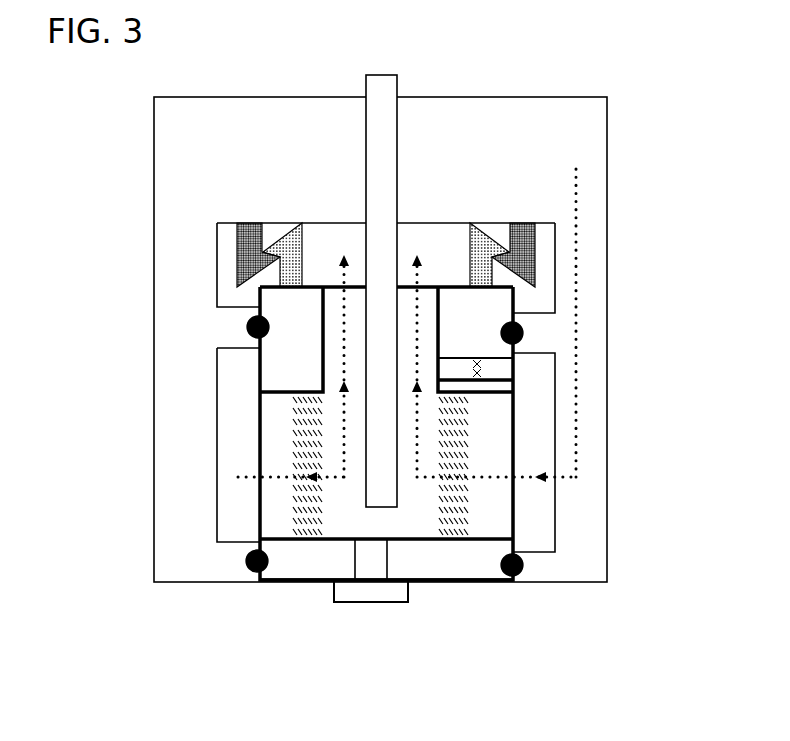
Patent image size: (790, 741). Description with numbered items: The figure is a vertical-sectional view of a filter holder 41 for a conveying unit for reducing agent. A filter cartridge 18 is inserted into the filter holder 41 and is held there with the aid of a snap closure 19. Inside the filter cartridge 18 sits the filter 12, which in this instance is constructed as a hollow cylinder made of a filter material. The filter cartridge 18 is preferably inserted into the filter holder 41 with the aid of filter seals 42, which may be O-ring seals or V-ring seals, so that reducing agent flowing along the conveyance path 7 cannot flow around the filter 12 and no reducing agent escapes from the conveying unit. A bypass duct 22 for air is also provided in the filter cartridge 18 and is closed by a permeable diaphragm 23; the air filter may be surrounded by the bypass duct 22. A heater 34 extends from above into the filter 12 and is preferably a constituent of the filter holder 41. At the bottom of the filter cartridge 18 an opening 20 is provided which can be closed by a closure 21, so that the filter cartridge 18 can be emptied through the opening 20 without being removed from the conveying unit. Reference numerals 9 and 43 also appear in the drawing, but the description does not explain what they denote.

The filter holder 41 is at (128, 125).
The snap closure 19 is at (537, 243).
The chamber 9 is at (310, 533).
The bypass duct 22 is at (462, 357).
The permeable diaphragm 23 is at (482, 369).
The filter 12 is at (297, 533).
The conveyance path 7 is at (577, 395).
The filter seals 42 is at (247, 327).
The opening 20 is at (387, 560).
The closure 21 is at (353, 602).
The filter cartridge 18 is at (488, 620).
The heater 34 is at (397, 75).
The support 43 is at (626, 733).